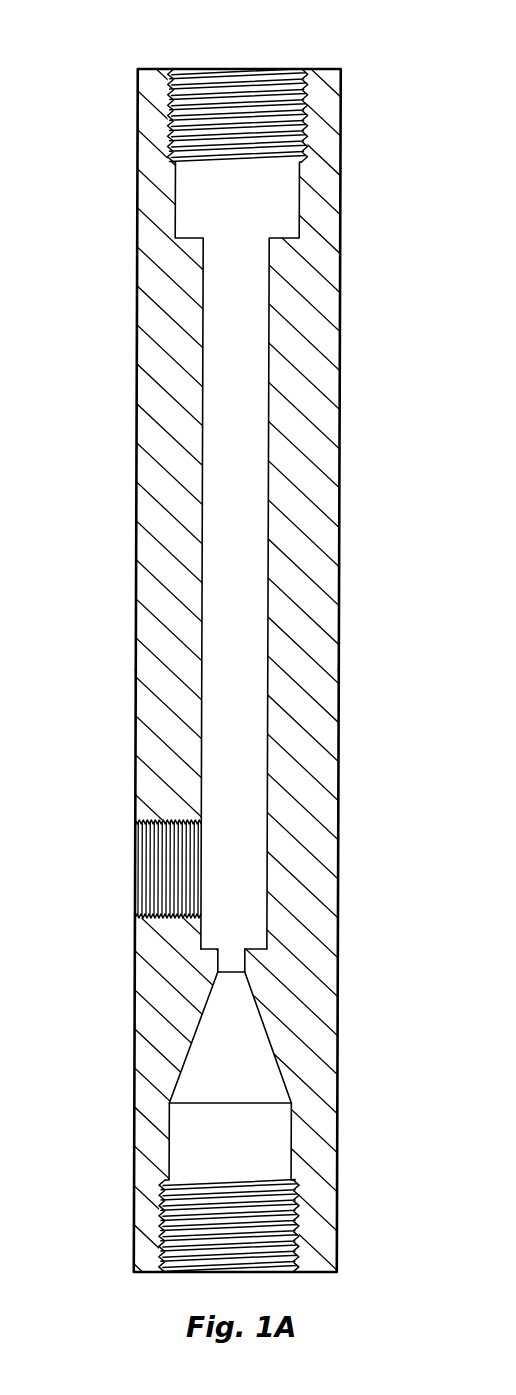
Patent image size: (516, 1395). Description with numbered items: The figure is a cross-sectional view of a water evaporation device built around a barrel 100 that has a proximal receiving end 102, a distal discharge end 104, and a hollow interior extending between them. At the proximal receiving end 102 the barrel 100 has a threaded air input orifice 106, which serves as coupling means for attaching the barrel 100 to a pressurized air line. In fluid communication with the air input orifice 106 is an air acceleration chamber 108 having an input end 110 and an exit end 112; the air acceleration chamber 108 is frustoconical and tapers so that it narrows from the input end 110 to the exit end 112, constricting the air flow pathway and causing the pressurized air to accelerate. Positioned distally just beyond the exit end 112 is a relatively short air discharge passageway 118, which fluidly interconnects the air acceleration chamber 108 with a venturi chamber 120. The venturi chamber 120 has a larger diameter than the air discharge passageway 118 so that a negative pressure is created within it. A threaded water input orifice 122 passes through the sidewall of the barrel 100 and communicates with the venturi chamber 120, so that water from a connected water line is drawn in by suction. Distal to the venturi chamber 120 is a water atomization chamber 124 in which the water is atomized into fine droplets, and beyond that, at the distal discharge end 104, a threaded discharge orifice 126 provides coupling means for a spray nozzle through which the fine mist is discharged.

The barrel 100 is at (119, 503).
The proximal receiving end 102 is at (337, 1217).
The distal discharge end 104 is at (341, 124).
The air input orifice 106 is at (207, 1195).
The air acceleration chamber 108 is at (236, 1055).
The input end 110 is at (270, 1100).
The exit end 112 is at (240, 976).
The air discharge passageway 118 is at (235, 959).
The venturi chamber 120 is at (242, 910).
The water input orifice 122 is at (145, 865).
The water atomization chamber 124 is at (245, 576).
The discharge orifice 126 is at (258, 80).